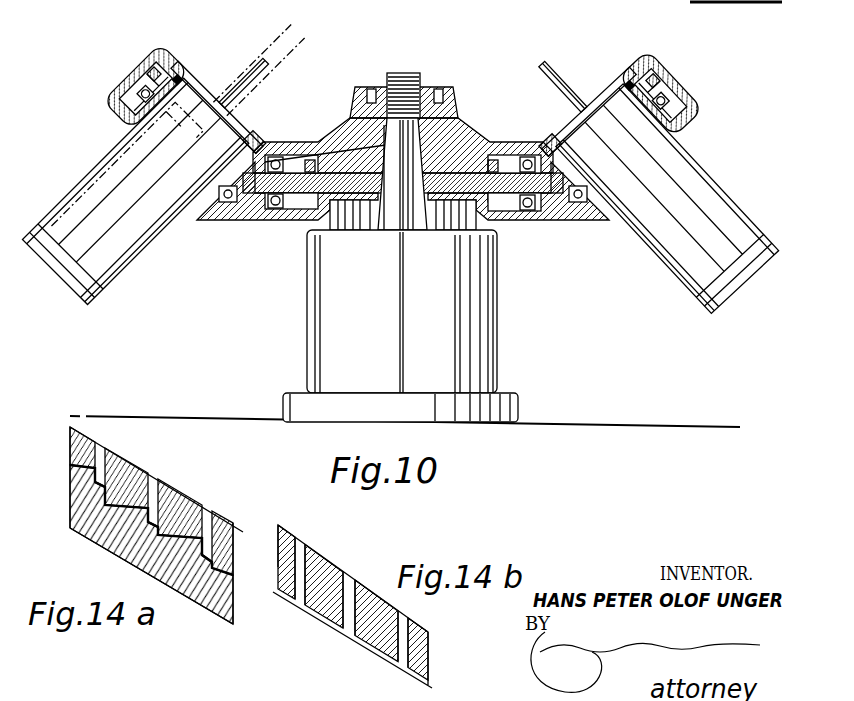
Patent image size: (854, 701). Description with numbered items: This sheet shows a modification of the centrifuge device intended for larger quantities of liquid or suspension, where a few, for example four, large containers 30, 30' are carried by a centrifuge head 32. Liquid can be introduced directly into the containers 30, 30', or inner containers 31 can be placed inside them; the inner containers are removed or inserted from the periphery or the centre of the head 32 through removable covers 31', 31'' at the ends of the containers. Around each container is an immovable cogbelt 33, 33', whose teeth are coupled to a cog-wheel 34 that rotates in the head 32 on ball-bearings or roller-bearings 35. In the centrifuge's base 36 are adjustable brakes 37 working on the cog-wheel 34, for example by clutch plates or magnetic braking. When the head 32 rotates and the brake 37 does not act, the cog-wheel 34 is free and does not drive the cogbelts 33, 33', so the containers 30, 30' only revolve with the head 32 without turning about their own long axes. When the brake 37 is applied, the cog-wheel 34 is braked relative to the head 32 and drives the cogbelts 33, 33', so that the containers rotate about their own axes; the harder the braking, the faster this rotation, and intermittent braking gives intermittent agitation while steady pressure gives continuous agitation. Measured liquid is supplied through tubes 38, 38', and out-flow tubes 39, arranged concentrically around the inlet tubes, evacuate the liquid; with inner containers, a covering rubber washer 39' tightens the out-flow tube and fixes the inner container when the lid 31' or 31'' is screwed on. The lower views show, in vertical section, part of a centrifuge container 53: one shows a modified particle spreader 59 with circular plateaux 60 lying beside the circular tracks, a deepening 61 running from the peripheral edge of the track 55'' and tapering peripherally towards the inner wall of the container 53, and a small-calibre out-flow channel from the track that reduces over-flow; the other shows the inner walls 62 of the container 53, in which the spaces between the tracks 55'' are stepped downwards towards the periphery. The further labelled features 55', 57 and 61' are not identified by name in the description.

In FIG. 10, the container 30 is at (135, 191).
In FIG. 10, the container 30' is at (667, 198).
In FIG. 10, the inner container 31 is at (148, 190).
In FIG. 10, the removable cover 31' is at (216, 103).
In FIG. 10, the removable cover 31'' is at (67, 278).
In FIG. 10, the centrifuge head 32 is at (463, 138).
In FIG. 10, the cogbelt 33 is at (204, 103).
In FIG. 10, the cogbelt 33' is at (677, 93).
In FIG. 10, the cog-wheel 34 is at (510, 218).
In FIG. 10, the ball-bearings or roller-bearings 35 is at (278, 215).
In FIG. 10, the centrifuge base 36 is at (477, 313).
In FIG. 10, the adjustable brake 37 is at (343, 220).
In FIG. 10, the tube 38 is at (267, 82).
In FIG. 10, the tube 38' is at (568, 82).
In FIG. 10, the out-flow tube 39 is at (175, 129).
In FIG. 10, the covering rubber washer 39' is at (265, 77).
In FIG. 14B, the centrifuge container 53 is at (318, 610).
In FIG. 14B, the slot 55' is at (373, 621).
In FIG. 14A, the track 55'' is at (179, 495).
In FIG. 14A, the interface line 57 is at (150, 485).
In FIG. 14A, the particle spreader 59 is at (113, 538).
In FIG. 14A, the circular plateau 60 is at (96, 500).
In FIG. 14A, the deepening 61 is at (125, 464).
In FIG. 14A, the protrusion 61' is at (224, 528).
In FIG. 14B, the inner wall 62 is at (322, 562).